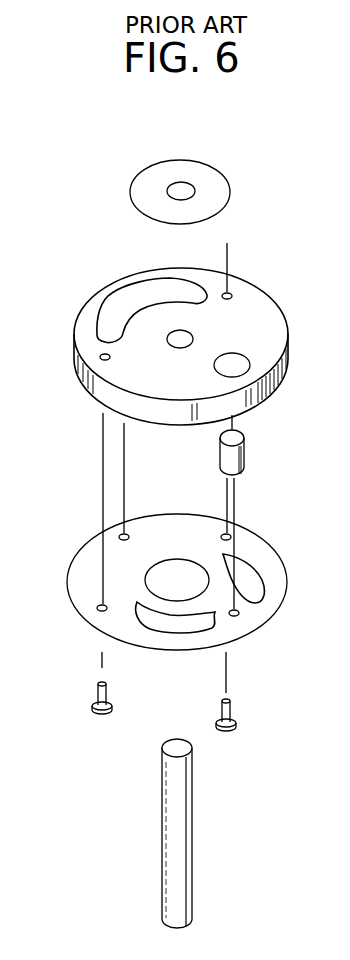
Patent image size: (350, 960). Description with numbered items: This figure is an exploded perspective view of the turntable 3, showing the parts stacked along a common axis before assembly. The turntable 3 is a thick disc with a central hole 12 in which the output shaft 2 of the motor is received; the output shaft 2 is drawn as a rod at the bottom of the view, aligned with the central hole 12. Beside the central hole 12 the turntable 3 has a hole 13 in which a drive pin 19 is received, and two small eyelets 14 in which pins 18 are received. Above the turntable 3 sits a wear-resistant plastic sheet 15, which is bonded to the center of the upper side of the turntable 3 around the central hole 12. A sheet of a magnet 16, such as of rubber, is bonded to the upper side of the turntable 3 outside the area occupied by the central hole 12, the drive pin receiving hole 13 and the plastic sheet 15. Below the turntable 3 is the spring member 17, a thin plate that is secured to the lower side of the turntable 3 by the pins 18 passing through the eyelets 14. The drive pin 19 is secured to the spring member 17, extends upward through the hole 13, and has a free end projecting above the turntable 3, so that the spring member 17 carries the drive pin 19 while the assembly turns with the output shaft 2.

The output shaft 2 is at (190, 825).
The turntable 3 is at (260, 303).
The central hole 12 is at (175, 335).
The hole 13 is at (240, 368).
The eyelets 14 is at (230, 294).
The wear-resistant plastic sheet 15 is at (220, 190).
The magnet 16 is at (110, 310).
The spring member 17 is at (85, 555).
The pins 18 is at (88, 698).
The drive pin 19 is at (247, 445).